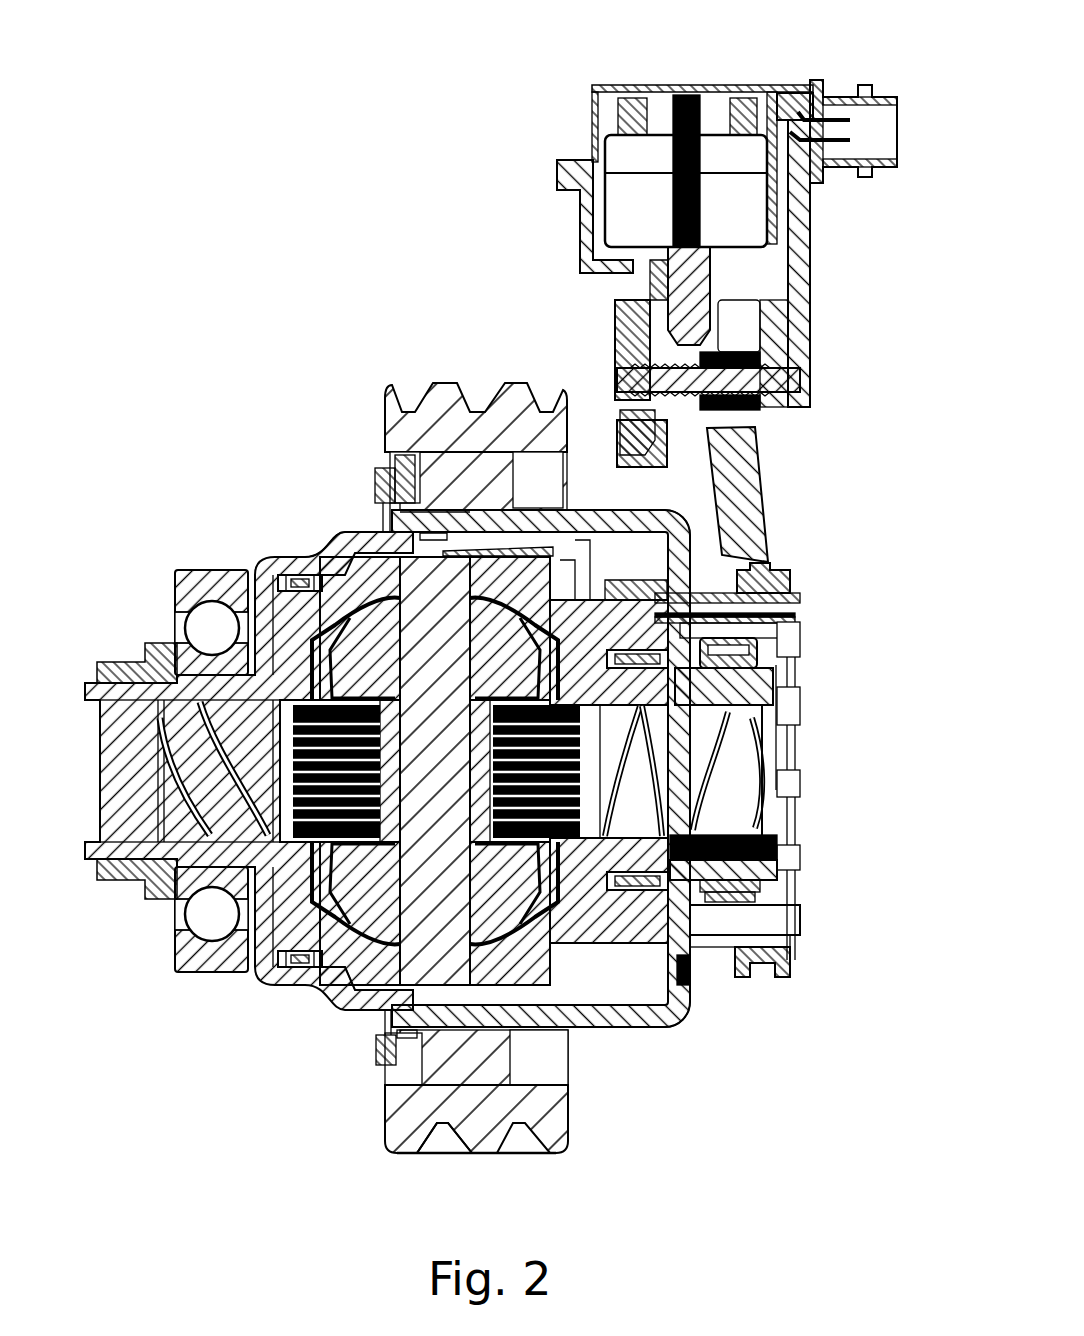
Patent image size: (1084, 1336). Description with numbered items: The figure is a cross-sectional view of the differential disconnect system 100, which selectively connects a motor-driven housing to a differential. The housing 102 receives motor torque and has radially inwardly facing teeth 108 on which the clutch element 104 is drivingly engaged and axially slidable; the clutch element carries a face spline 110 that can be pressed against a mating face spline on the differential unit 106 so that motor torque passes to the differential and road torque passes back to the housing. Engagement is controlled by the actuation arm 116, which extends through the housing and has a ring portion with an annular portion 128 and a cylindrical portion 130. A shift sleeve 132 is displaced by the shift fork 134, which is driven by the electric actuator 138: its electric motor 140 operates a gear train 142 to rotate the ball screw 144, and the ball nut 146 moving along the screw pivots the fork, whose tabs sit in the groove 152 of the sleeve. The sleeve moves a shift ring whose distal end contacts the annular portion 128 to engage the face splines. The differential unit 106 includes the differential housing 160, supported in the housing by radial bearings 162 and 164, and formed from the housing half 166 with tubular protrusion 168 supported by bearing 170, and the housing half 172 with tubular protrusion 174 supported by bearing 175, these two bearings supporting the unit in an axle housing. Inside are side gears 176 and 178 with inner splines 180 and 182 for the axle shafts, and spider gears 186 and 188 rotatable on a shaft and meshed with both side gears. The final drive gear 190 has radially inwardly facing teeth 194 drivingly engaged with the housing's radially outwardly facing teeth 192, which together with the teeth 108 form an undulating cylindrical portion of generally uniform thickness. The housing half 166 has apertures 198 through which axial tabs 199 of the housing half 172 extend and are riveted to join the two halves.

The differential disconnect system 100 is at (360, 378).
The housing 102 is at (680, 1010).
The clutch element 104 is at (625, 540).
The differential unit 106 is at (258, 985).
The radially inwardly facing teeth 108 is at (520, 545).
The face spline 110 is at (690, 525).
The actuation arm 116 is at (800, 612).
The annular portion 128 is at (640, 570).
The cylindrical portion 130 is at (790, 640).
The shift sleeve 132 is at (770, 585).
The shift fork 134 is at (735, 440).
The electric actuator 138 is at (575, 248).
The electric motor 140 is at (700, 92).
The gear train 142 is at (625, 345).
The ball screw 144 is at (770, 388).
The ball nut 146 is at (745, 340).
The groove 152 is at (763, 983).
The differential housing 160 is at (370, 970).
The radial bearing 162 is at (800, 815).
The radial bearing 164 is at (300, 580).
The housing half 166 is at (347, 537).
The tubular protrusion 168 is at (180, 680).
The bearing 170 is at (195, 580).
The housing half 172 is at (610, 1015).
The tubular protrusion 174 is at (790, 850).
The bearing 175 is at (820, 880).
The side gear 176 is at (542, 873).
The side gear 178 is at (195, 935).
The inner spline 180 is at (735, 730).
The inner spline 182 is at (180, 870).
The spider gear 186 is at (392, 665).
The spider gear 188 is at (335, 955).
The final drive gear 190 is at (493, 1130).
The radially outwardly facing teeth 192 is at (640, 1023).
The radially inwardly facing teeth 194 is at (467, 1123).
The apertures 198 is at (390, 1043).
The axial tabs 199 is at (395, 1033).